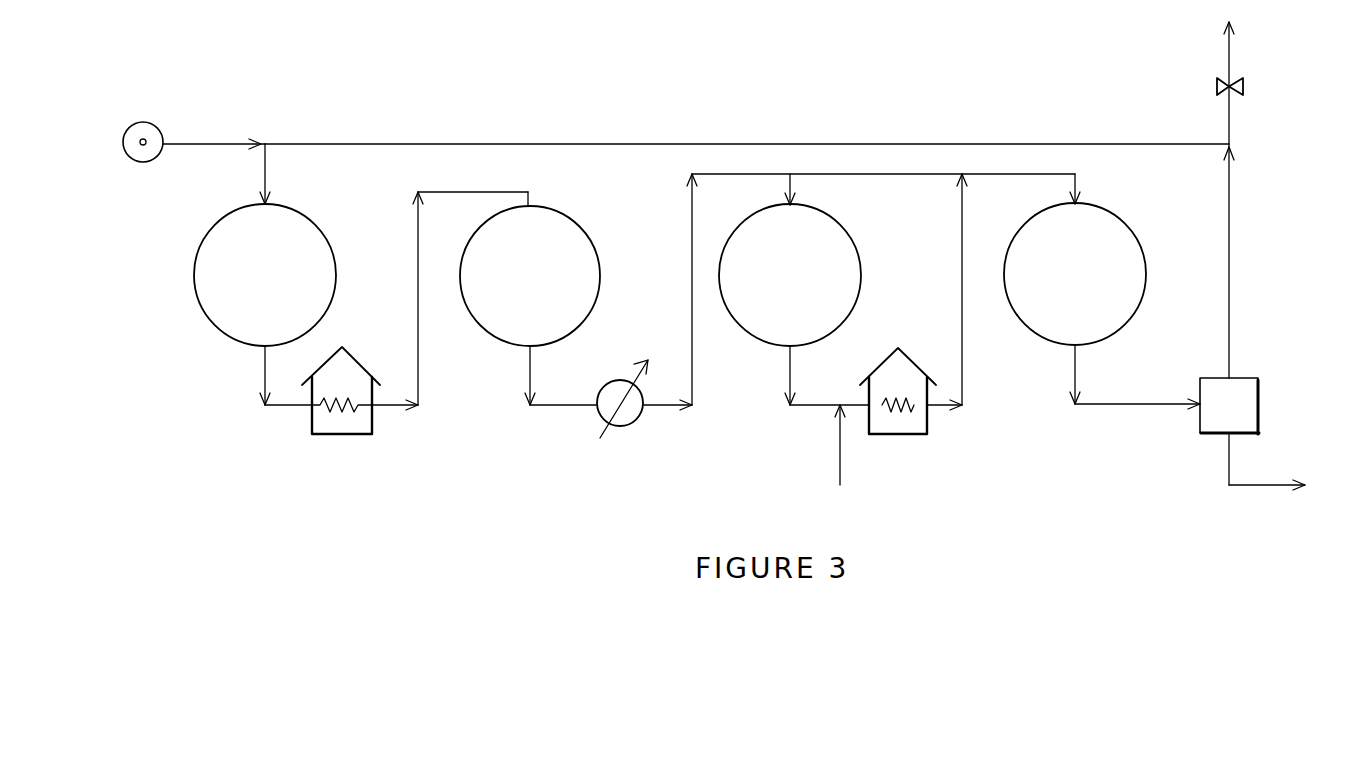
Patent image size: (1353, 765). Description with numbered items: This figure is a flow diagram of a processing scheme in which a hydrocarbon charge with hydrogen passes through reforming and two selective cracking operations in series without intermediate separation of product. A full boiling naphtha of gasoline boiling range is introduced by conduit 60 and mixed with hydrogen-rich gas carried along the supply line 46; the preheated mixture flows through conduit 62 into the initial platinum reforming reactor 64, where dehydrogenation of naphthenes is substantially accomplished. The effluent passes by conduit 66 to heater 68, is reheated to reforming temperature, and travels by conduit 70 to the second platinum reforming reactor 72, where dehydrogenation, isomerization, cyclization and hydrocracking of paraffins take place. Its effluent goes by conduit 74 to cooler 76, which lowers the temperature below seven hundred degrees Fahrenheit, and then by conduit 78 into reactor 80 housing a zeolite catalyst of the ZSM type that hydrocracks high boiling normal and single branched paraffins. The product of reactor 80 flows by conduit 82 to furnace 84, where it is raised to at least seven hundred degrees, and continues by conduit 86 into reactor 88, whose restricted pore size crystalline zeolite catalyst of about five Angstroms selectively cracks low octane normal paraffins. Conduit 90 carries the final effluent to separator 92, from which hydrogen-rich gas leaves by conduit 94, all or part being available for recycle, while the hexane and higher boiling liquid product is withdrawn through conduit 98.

The hydrogen supply line 46 is at (732, 144).
The conduit 60 is at (192, 142).
The conduit 62 is at (267, 173).
The initial platinum reforming reactor 64 is at (286, 316).
The conduit 66 is at (265, 407).
The heater 68 is at (348, 437).
The conduit 70 is at (419, 406).
The second platinum catalyst reforming reactor 72 is at (510, 317).
The conduit 74 is at (532, 406).
The cooler 76 is at (618, 430).
The conduit 78 is at (693, 406).
The reactor 80 is at (769, 319).
The conduit 82 is at (814, 407).
The furnace 84 is at (901, 436).
The conduit 86 is at (937, 407).
The reactor 88 is at (1054, 319).
The conduit 90 is at (1113, 406).
The separator 92 is at (1229, 406).
The conduit 94 is at (1231, 262).
The conduit 98 is at (1265, 488).